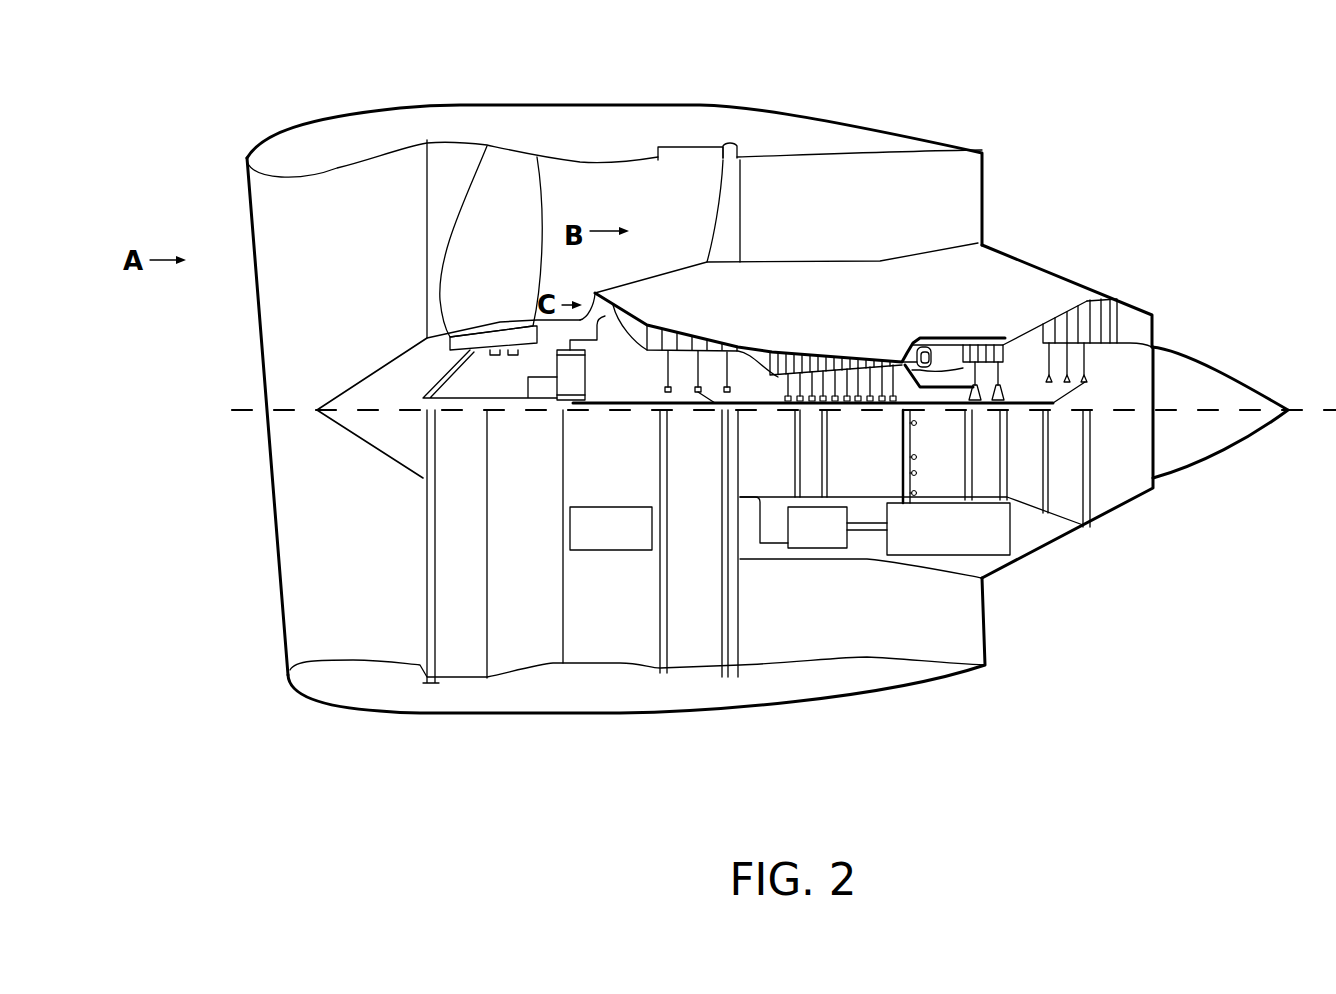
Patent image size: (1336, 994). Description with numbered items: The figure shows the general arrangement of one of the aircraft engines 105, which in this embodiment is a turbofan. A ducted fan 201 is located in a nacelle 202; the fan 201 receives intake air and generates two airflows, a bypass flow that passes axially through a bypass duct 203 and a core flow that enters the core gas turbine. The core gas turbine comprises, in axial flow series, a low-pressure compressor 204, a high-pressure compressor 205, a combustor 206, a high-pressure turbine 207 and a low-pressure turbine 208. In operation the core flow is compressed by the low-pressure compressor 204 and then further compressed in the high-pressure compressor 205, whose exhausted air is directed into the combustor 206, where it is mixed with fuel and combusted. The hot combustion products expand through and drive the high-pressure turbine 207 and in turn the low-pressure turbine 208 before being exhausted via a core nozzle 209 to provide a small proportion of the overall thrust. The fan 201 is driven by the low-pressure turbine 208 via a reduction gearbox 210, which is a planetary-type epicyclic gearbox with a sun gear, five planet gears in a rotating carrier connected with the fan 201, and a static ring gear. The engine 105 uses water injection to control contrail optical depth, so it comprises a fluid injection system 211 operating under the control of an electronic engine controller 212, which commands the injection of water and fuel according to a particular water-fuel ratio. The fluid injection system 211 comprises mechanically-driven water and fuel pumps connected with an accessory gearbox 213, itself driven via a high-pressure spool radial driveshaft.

The engine 105 is at (181, 76).
The fan 201 is at (514, 284).
The nacelle 202 is at (343, 115).
The bypass duct 203 is at (624, 199).
The low-pressure compressor 204 is at (704, 320).
The high-pressure compressor 205 is at (833, 334).
The combustor 206 is at (930, 331).
The high-pressure turbine 207 is at (987, 328).
The low-pressure turbine 208 is at (1077, 292).
The core nozzle 209 is at (1147, 313).
The reduction gearbox 210 is at (600, 381).
The fluid injection system 211 is at (1011, 548).
The electronic engine controller 212 is at (570, 542).
The accessory gearbox 213 is at (847, 545).